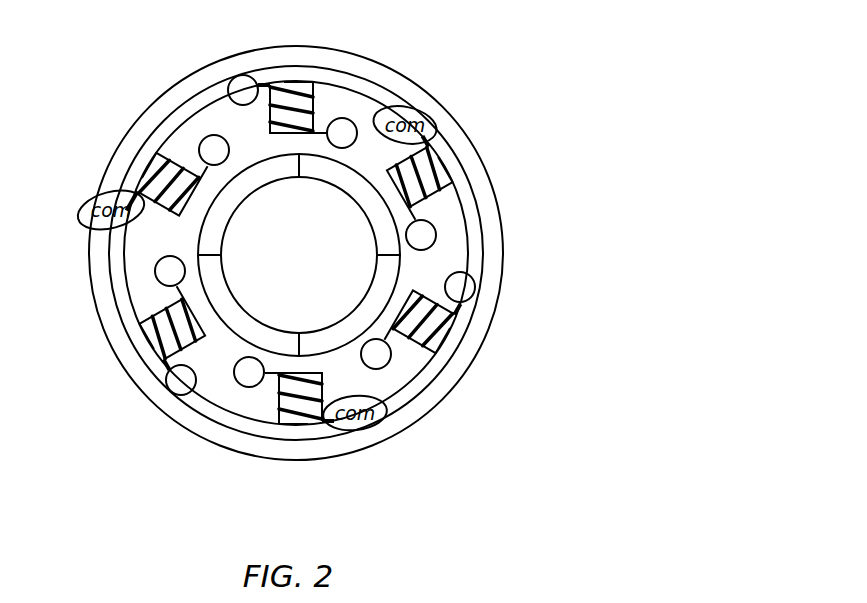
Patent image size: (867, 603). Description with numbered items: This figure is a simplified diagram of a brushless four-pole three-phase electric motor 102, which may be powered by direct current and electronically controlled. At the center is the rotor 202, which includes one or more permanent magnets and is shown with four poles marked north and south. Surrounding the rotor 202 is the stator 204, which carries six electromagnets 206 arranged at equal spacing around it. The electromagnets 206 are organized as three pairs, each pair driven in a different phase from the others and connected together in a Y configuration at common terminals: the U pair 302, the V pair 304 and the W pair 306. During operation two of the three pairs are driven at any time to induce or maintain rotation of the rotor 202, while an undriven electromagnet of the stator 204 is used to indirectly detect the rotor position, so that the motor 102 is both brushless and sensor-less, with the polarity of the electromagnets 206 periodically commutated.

The motor 102 is at (486, 82).
The rotor 202 is at (333, 337).
The stator 204 is at (470, 258).
The electromagnets 206 is at (307, 100).
The U pair of electromagnets 302 is at (243, 75).
The V pair of electromagnets 304 is at (177, 395).
The W pair of electromagnets 306 is at (207, 134).